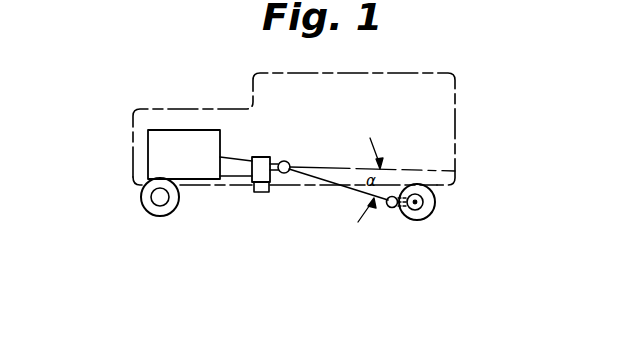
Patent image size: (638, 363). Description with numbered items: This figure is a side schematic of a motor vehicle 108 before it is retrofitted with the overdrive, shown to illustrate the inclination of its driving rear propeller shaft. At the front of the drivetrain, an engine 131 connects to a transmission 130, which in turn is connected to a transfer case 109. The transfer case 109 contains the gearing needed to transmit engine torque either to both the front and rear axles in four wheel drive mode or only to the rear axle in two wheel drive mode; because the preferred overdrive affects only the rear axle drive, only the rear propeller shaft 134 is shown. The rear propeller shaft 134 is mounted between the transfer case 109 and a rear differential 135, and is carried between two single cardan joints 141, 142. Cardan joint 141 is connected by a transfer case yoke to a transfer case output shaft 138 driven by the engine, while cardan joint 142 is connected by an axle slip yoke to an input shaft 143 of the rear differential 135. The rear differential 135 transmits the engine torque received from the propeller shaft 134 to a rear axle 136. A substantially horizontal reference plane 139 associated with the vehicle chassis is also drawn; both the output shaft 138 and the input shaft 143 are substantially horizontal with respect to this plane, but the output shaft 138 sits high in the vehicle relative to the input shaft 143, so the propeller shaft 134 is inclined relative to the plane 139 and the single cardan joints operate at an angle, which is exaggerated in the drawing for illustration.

The tractor vehicle 108 is at (247, 174).
The engine 131 is at (192, 168).
The transmission 130 is at (235, 179).
The transfer case 109 is at (265, 192).
The transfer case output shaft 138 is at (276, 161).
The single cardan joint 141 is at (288, 172).
The rear propeller shaft 134 is at (325, 183).
The single cardan joint 142 is at (398, 208).
The rear differential 135 is at (414, 212).
The rear axle 136 is at (430, 217).
The input shaft of the rear differential 143 is at (412, 196).
The horizontal reference plane 139 is at (458, 171).